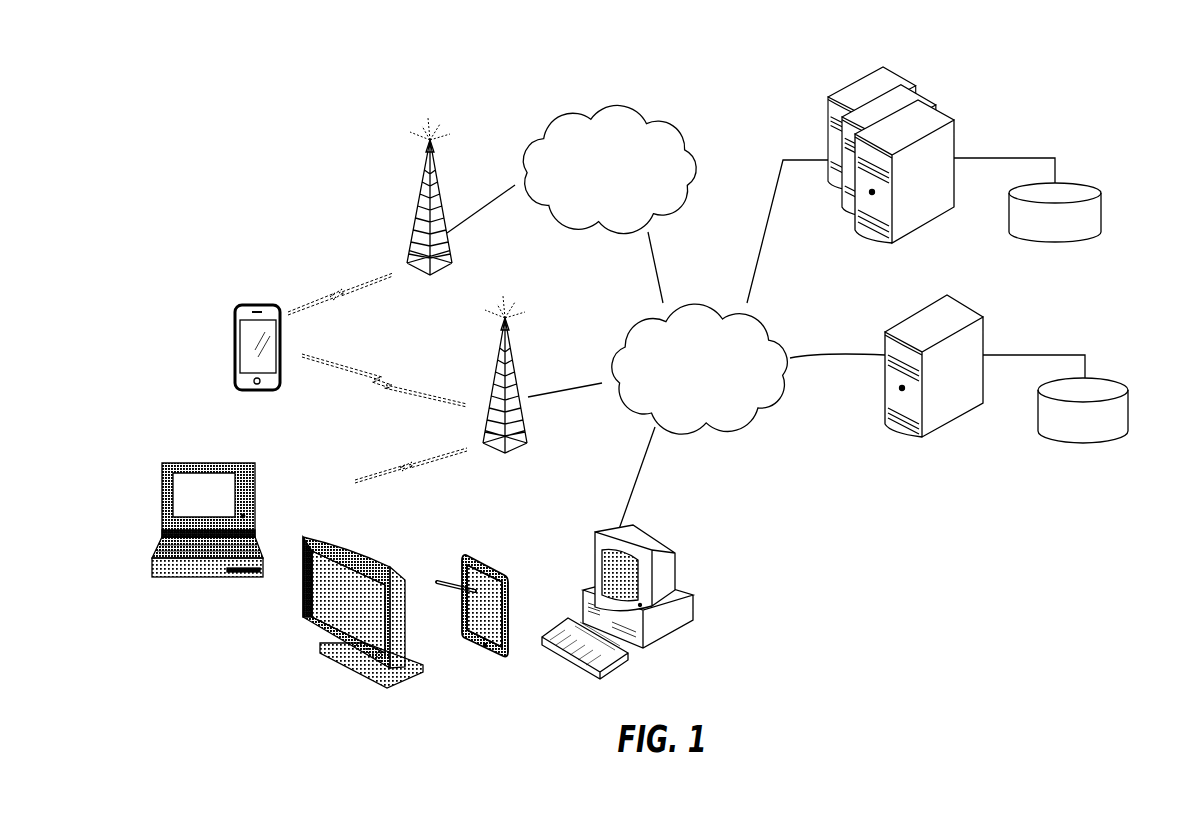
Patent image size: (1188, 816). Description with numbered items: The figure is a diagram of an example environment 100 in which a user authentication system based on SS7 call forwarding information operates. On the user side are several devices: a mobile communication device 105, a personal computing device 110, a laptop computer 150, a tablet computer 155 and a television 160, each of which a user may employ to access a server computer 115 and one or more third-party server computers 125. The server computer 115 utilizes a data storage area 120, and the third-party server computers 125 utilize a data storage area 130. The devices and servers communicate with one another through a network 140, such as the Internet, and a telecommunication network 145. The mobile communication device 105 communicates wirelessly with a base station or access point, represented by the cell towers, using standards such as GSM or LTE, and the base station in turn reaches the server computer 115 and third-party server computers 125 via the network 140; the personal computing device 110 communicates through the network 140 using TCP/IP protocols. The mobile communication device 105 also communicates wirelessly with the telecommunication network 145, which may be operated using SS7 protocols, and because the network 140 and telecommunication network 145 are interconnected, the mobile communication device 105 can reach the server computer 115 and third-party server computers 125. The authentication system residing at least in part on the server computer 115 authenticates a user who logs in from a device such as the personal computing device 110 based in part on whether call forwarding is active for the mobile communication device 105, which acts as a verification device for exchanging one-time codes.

The environment 100 is at (265, 125).
The mobile communication device 105 is at (256, 305).
The personal computing device 110 is at (677, 576).
The server computer 115 is at (940, 433).
The data storage area 120 is at (1117, 377).
The third-party server computers 125 is at (928, 95).
The data storage area 130 is at (1073, 182).
The network 140 is at (703, 437).
The telecommunication network 145 is at (562, 107).
The laptop computer 150 is at (257, 478).
The tablet computer 155 is at (500, 559).
The television 160 is at (333, 533).